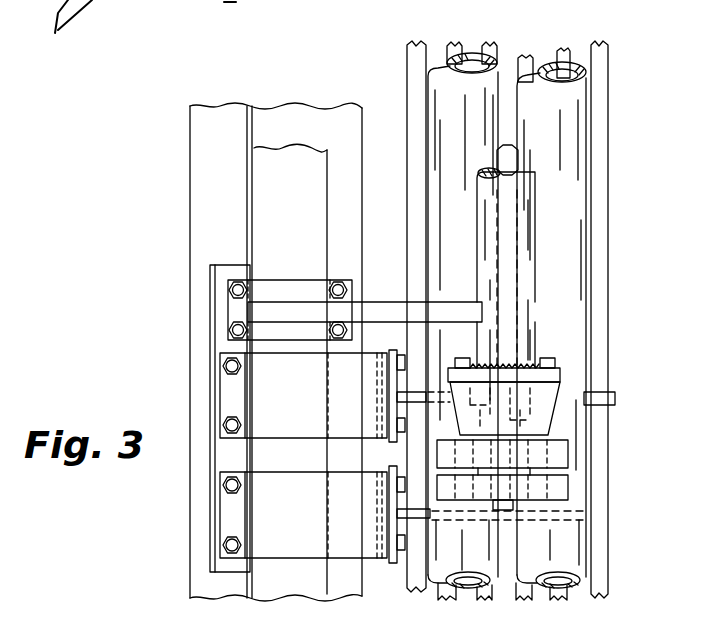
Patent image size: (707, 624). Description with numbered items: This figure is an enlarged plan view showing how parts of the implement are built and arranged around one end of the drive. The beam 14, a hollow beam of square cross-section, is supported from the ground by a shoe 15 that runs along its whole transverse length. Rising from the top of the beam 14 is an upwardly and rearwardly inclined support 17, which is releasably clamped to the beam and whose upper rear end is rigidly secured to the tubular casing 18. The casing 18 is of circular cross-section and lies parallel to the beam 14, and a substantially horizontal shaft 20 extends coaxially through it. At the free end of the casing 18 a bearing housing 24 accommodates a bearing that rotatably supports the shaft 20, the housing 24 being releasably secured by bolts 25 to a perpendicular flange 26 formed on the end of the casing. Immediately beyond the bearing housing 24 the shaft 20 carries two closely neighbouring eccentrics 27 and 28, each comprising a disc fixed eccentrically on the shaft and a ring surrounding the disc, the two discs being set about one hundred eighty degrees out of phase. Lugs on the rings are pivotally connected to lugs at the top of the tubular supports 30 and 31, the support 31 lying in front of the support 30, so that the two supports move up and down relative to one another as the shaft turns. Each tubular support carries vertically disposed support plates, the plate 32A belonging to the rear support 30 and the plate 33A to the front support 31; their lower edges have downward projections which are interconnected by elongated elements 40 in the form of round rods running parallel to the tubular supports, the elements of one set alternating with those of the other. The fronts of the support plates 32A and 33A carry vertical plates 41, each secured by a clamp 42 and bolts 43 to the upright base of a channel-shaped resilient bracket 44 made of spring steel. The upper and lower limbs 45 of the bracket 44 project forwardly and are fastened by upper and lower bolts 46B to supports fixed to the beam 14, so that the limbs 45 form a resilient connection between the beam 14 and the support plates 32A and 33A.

The beam 14 is at (318, 137).
The shoe 15 is at (198, 148).
The support 17 is at (380, 300).
The tubular casing 18 is at (492, 220).
The shaft 20 is at (497, 157).
The bearing housing 24 is at (565, 397).
The bolt 25 is at (558, 365).
The flange 26 is at (553, 395).
The eccentric 27 is at (567, 460).
The eccentric 28 is at (567, 492).
The tubular support 30 is at (570, 105).
The tubular support 31 is at (494, 76).
The support plate 32A is at (614, 400).
The support plate 33A is at (420, 516).
The elongated element 40 is at (456, 45).
The plate 41 is at (389, 371).
The clamp 42 is at (378, 468).
The bolt 43 is at (406, 420).
The resilient bracket 44 is at (225, 405).
The limb 45 is at (260, 377).
The bolt 46B is at (240, 368).